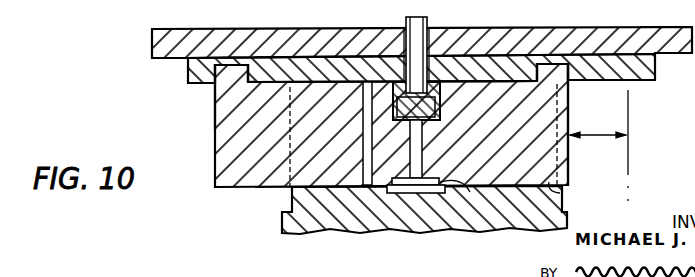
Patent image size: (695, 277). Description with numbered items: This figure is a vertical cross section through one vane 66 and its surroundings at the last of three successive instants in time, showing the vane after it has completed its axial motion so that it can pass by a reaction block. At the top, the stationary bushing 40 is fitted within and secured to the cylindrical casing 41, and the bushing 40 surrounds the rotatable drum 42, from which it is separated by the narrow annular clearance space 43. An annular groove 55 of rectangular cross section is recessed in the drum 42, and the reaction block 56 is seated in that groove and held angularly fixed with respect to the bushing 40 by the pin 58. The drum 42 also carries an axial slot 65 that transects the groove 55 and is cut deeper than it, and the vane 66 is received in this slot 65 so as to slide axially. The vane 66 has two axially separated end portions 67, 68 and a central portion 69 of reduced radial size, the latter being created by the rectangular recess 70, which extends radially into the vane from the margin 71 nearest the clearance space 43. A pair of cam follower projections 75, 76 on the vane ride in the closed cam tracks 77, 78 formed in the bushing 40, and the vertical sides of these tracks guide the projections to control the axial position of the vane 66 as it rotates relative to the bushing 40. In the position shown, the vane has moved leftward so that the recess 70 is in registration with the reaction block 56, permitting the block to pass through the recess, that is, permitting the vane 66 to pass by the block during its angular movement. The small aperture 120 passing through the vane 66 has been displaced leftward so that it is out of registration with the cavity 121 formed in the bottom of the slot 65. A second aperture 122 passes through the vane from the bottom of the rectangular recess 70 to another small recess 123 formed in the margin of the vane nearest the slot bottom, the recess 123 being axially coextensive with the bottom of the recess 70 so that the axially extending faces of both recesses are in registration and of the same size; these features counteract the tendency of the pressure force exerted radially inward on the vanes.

The stationary bushing 40 is at (500, 50).
The cylindrical casing 41 is at (638, 29).
The rotatable drum 42 is at (291, 214).
The clearance space 43 is at (317, 78).
The annular groove 55 is at (436, 90).
The reaction block 56 is at (404, 100).
The pin 58 is at (428, 24).
The axial slot 65 is at (563, 193).
The vane 66 is at (531, 150).
The end portion 67 is at (250, 120).
The end portion 68 is at (527, 112).
The central portion 69 is at (401, 161).
The rectangular recess 70 is at (441, 111).
The margin 71 is at (255, 95).
The cam follower projection 75 is at (238, 63).
The cam follower projection 76 is at (545, 62).
The cam track 77 is at (219, 63).
The cam track 78 is at (563, 62).
The aperture 120 is at (363, 142).
The cavity 121 is at (403, 193).
The second aperture 122 is at (420, 153).
The recess 123 is at (470, 192).